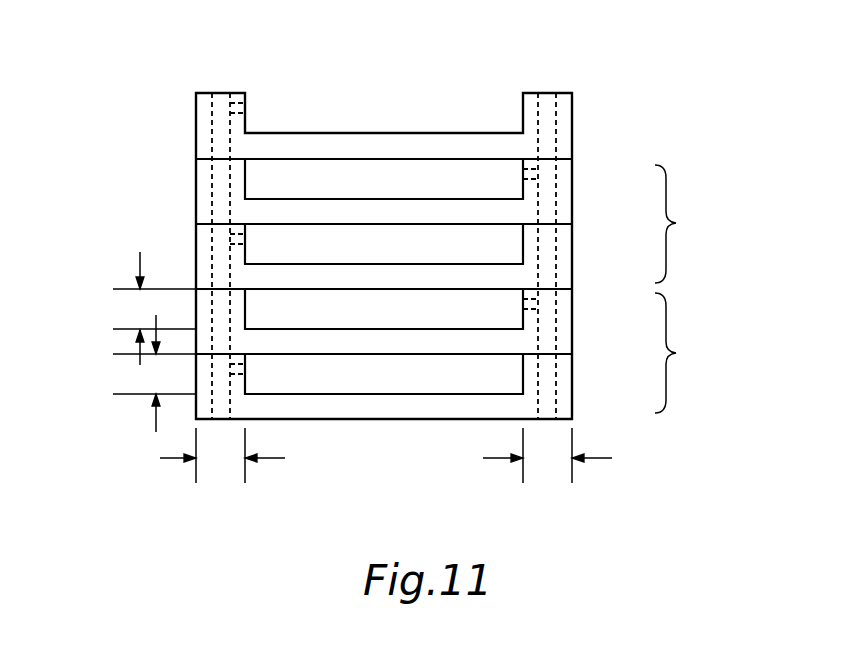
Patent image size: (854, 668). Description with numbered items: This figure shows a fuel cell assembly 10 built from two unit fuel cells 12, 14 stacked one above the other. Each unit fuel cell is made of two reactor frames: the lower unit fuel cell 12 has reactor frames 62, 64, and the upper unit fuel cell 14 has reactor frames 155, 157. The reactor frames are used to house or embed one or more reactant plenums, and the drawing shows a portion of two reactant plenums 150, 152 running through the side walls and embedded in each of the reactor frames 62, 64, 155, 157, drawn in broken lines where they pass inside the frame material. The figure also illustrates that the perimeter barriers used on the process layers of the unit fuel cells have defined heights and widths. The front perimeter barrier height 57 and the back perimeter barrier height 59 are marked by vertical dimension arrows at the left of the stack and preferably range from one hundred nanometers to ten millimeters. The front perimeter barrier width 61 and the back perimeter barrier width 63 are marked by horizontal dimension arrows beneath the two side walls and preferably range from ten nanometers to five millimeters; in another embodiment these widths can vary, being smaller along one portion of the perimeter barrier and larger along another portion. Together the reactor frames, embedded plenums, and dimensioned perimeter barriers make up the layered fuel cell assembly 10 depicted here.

The fuel cell assembly 10 is at (153, 55).
The unit fuel cell 12 is at (682, 353).
The unit fuel cell 14 is at (682, 224).
The front perimeter barrier height 57 is at (140, 424).
The back perimeter barrier height 59 is at (138, 262).
The front perimeter barrier width 61 is at (270, 460).
The back perimeter barrier width 63 is at (597, 462).
The reactor frame 62 is at (572, 388).
The reactor frame 64 is at (572, 323).
The reactant plenum 150 is at (222, 92).
The reactant plenum 152 is at (546, 92).
The reactor frame 155 is at (572, 243).
The reactor frame 157 is at (572, 193).